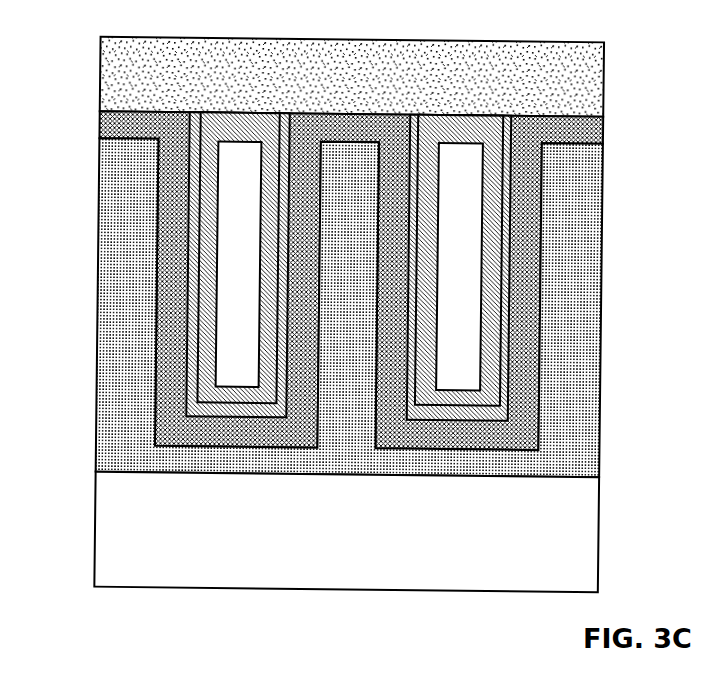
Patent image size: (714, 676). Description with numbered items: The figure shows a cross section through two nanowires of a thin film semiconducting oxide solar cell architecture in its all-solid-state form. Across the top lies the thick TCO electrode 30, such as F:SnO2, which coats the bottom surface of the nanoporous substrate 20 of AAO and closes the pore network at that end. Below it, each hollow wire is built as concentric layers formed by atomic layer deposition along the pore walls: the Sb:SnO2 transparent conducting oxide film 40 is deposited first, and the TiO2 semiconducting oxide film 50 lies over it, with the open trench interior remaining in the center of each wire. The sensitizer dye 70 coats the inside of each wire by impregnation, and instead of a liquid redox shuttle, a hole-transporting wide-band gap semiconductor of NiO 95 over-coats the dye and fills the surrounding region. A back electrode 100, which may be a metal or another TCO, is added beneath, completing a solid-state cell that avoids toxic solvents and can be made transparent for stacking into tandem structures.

The TCO electrode 30 is at (120, 73).
The NiO 95 is at (112, 180).
The sensitizer dye 70 is at (170, 238).
The TiO2 film 50 is at (188, 278).
The Sb:SnO2 film 40 is at (210, 323).
The nanoporous substrate 20 is at (232, 367).
The back electrode 100 is at (110, 530).